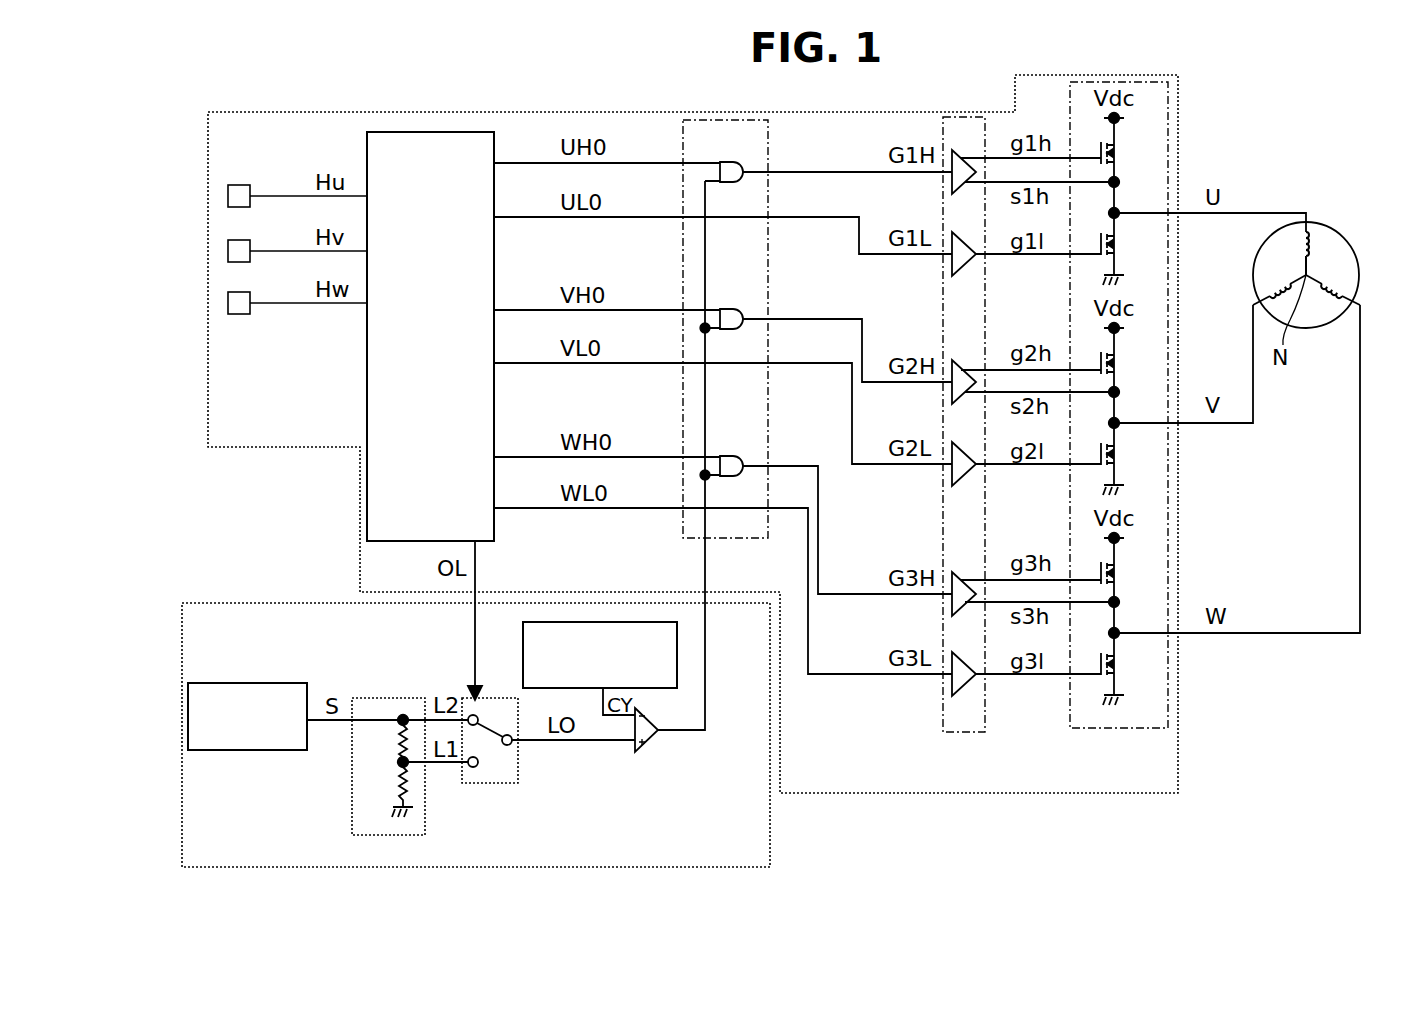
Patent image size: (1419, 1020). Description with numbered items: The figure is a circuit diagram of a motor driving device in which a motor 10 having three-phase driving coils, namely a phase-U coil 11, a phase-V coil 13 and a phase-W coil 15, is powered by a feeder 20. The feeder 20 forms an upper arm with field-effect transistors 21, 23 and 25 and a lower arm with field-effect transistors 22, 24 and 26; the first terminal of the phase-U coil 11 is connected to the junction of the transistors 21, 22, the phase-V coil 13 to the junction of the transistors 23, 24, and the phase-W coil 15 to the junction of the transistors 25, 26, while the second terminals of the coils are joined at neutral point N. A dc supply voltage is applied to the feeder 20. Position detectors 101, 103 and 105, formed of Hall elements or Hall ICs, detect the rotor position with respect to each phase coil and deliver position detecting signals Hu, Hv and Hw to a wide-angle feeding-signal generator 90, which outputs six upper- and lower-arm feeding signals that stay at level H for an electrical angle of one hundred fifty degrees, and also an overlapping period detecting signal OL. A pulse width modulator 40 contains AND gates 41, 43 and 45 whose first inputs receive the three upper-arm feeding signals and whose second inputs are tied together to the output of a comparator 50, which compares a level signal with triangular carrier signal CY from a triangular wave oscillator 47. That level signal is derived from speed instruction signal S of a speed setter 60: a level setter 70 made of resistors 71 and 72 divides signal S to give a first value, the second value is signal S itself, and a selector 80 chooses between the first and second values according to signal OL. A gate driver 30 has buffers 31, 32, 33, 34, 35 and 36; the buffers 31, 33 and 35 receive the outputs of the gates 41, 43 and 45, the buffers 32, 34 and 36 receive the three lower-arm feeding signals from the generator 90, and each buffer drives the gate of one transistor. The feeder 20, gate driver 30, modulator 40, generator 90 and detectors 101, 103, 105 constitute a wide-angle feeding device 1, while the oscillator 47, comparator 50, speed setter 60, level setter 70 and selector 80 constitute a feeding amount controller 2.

The wide-angle feeding device 1 is at (781, 108).
The feeding amount controller 2 is at (244, 603).
The motor 10 is at (1310, 222).
The phase-U coil 11 is at (1316, 248).
The phase-V coil 13 is at (1262, 278).
The phase-W coil 15 is at (1348, 278).
The feeder 20 is at (1112, 728).
The field-effect transistor 21 is at (1118, 152).
The field-effect transistor 22 is at (1118, 256).
The field-effect transistor 23 is at (1118, 362).
The field-effect transistor 24 is at (1118, 466).
The field-effect transistor 25 is at (1118, 572).
The field-effect transistor 26 is at (1118, 676).
The gate driver 30 is at (970, 732).
The buffer 31 is at (962, 188).
The buffer 32 is at (962, 270).
The buffer 33 is at (962, 398).
The buffer 34 is at (962, 480).
The buffer 35 is at (962, 610).
The buffer 36 is at (962, 690).
The pulse width modulator 40 is at (735, 538).
The AND gate 41 is at (732, 162).
The AND gate 43 is at (732, 309).
The AND gate 45 is at (732, 456).
The triangular wave oscillator 47 is at (523, 662).
The comparator 50 is at (652, 752).
The speed setter 60 is at (255, 750).
The level setter 70 is at (427, 835).
The resistor 71 is at (395, 742).
The resistor 72 is at (395, 785).
The selector 80 is at (505, 783).
The wide-angle feeding-signal generator 90 is at (395, 541).
The position detector 101 is at (246, 207).
The position detector 103 is at (246, 262).
The position detector 105 is at (246, 314).